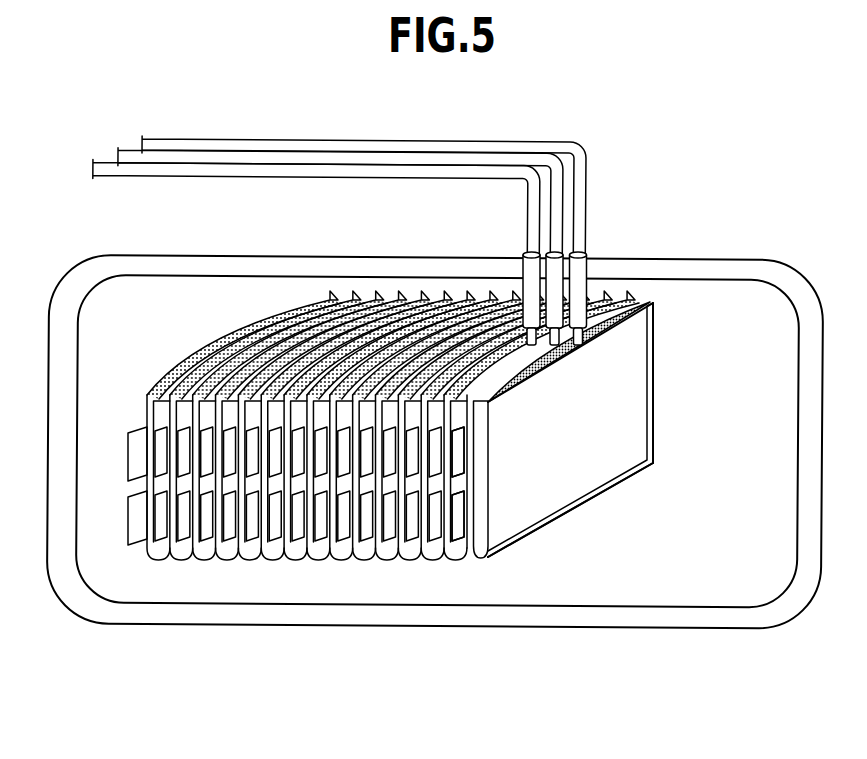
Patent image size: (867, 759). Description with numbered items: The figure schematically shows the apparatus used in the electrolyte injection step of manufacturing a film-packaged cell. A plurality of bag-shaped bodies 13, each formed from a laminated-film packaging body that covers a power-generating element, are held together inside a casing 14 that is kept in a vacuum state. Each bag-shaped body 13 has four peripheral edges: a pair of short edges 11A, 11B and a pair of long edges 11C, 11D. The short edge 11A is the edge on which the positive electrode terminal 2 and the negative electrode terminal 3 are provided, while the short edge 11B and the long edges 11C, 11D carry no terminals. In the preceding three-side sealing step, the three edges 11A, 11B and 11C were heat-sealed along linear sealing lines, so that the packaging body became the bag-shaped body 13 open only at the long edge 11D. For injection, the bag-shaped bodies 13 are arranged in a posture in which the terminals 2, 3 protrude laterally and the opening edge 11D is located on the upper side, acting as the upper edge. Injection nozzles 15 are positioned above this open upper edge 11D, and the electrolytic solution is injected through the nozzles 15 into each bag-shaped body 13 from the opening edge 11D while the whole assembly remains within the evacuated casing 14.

The positive electrode terminal 2 is at (460, 458).
The negative electrode terminal 3 is at (460, 527).
The peripheral edge 11A is at (481, 522).
The peripheral edge 11B is at (656, 361).
The peripheral edge 11C is at (563, 519).
The opening edge 11D is at (583, 367).
The bag-shaped body 13 is at (513, 509).
The casing 14 is at (704, 258).
The injection nozzle 15 is at (580, 294).